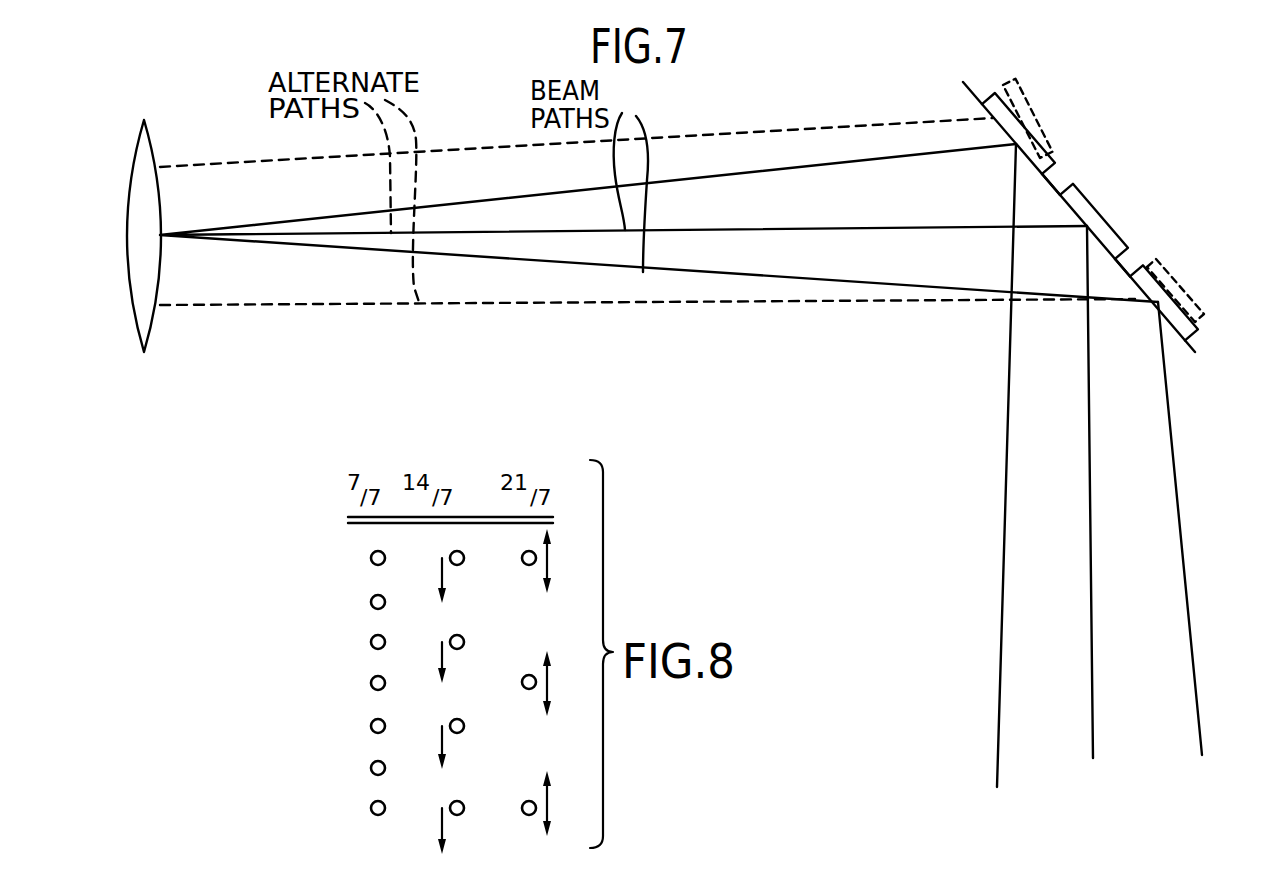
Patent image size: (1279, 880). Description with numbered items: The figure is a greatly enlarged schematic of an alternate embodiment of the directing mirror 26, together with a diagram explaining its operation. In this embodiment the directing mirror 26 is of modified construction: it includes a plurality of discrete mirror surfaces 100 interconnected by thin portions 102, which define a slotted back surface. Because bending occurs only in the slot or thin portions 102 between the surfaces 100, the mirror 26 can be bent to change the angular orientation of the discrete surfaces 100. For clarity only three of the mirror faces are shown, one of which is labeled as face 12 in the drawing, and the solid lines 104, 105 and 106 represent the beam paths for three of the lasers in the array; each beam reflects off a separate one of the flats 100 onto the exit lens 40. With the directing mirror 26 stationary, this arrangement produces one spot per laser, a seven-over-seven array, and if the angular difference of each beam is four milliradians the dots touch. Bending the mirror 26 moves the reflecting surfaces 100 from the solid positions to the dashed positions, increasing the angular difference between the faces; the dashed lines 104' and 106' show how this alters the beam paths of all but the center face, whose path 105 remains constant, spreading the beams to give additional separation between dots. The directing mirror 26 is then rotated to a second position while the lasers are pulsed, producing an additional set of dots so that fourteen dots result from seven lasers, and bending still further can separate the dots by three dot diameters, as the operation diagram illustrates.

The exit lens 40 is at (137, 147).
The directing mirror 26 is at (953, 90).
The mirror segment 12 is at (1074, 185).
The discrete mirror surfaces 100 is at (1067, 203).
The thin portions 102 is at (1128, 263).
The beam path 104 is at (971, 465).
The beam path 105 is at (1092, 608).
The beam path 106 is at (1161, 528).
The altered beam path 104' is at (576, 126).
The altered beam path 106' is at (647, 326).